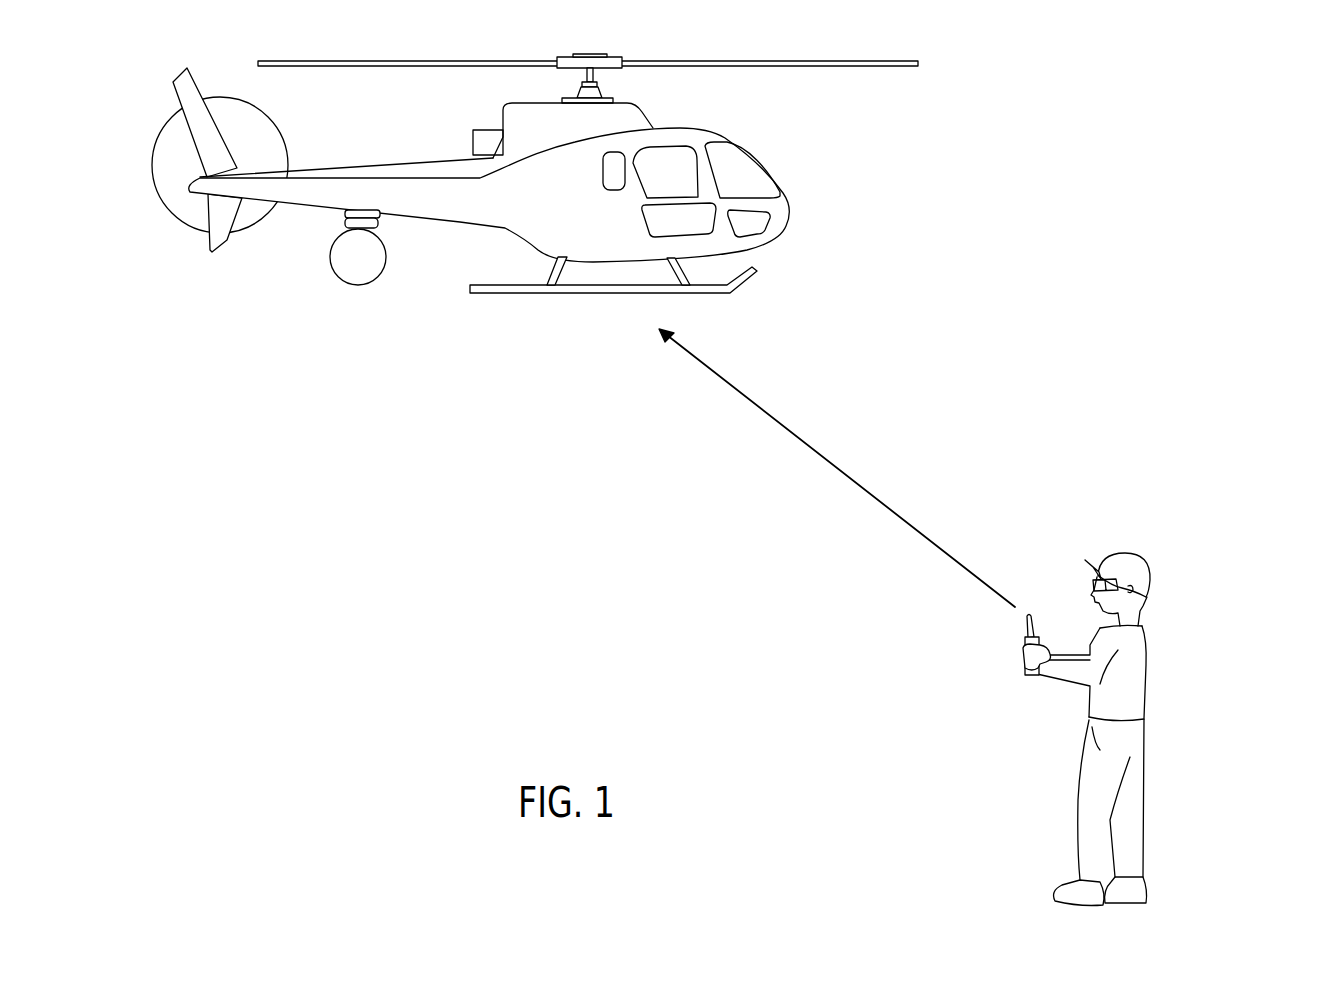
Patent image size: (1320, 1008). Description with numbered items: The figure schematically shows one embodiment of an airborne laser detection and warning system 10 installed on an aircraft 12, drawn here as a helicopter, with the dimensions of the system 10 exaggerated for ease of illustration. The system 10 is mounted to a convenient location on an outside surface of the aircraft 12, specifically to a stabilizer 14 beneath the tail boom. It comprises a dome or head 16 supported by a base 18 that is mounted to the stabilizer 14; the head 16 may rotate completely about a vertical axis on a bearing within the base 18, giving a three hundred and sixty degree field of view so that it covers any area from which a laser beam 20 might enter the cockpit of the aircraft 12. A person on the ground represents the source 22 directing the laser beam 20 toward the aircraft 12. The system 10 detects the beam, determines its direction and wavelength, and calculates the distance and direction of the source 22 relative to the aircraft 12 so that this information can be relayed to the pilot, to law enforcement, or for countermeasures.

The laser detection and warning system 10 is at (368, 359).
The aircraft 12 is at (781, 192).
The stabilizer 14 is at (382, 221).
The head 16 is at (357, 287).
The base 18 is at (343, 221).
The laser beam 20 is at (848, 477).
The source 22 is at (1167, 562).